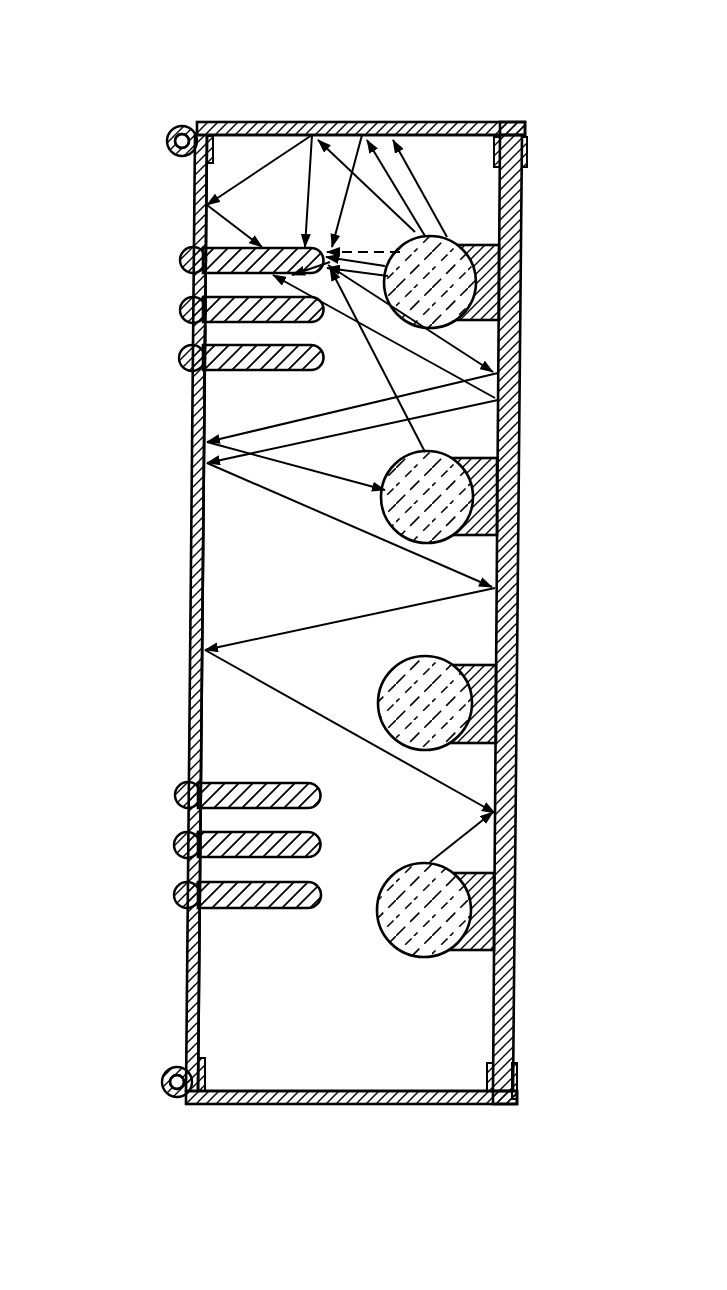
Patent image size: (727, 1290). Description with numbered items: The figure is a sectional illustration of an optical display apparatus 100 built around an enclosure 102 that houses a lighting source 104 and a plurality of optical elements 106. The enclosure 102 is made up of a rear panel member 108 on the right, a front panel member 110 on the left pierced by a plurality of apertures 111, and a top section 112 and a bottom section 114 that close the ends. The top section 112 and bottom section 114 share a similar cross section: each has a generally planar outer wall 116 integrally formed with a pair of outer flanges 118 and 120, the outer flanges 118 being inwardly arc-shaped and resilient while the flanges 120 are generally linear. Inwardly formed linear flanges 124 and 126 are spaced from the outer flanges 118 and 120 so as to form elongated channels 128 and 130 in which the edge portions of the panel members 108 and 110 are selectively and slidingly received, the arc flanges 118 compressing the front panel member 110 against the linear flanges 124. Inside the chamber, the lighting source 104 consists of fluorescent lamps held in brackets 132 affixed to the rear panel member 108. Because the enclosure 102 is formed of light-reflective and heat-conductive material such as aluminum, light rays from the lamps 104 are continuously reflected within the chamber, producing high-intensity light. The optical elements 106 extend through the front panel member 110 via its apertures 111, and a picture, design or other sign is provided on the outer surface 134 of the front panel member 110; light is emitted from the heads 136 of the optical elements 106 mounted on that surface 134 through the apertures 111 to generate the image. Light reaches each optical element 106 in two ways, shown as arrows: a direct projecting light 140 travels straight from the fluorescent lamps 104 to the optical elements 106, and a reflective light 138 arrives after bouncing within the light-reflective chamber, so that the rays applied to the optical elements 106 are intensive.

The optical display apparatus 100 is at (92, 52).
The enclosure 102 is at (172, 100).
The lighting source 104 is at (405, 862).
The optical element 106 is at (263, 245).
The rear panel member 108 is at (521, 493).
The front panel member 110 is at (205, 985).
The apertures 111 is at (208, 373).
The top section 112 is at (328, 125).
The bottom section 114 is at (308, 1105).
The outer wall 116 is at (392, 130).
The outer flange 118 is at (172, 134).
The outer flange 120 is at (530, 152).
The linear flange 124 is at (213, 160).
The linear flange 126 is at (494, 160).
The elongated channel 128 is at (206, 124).
The elongated channel 130 is at (515, 125).
The bracket 132 is at (486, 665).
The outer surface 134 is at (192, 530).
The head 136 is at (183, 255).
The reflective light 138 is at (455, 386).
The direct projecting light 140 is at (367, 252).